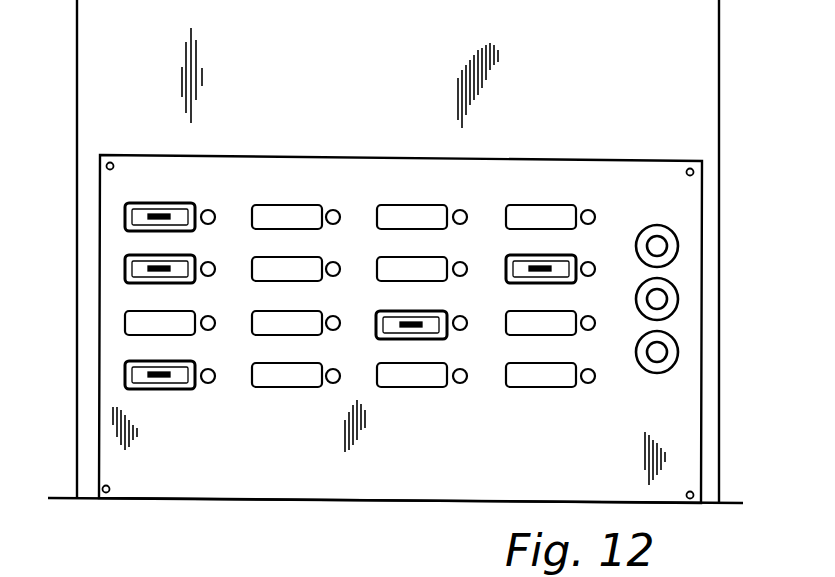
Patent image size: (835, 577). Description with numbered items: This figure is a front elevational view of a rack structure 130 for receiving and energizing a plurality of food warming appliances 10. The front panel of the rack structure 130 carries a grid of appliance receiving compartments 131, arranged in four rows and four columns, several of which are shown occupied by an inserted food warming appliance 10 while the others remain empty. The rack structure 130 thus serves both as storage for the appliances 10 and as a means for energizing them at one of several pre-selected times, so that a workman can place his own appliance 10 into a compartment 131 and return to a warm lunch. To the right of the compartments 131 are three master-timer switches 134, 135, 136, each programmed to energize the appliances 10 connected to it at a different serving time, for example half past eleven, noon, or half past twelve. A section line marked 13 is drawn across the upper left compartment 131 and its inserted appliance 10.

The food warming appliance 10 is at (133, 223).
The section line 13 is at (128, 195).
The rack structure 130 is at (498, 156).
The appliance receiving compartment 131 is at (188, 320).
The master-timer switch 134 is at (665, 248).
The master-timer switch 135 is at (665, 300).
The master-timer switch 136 is at (665, 354).